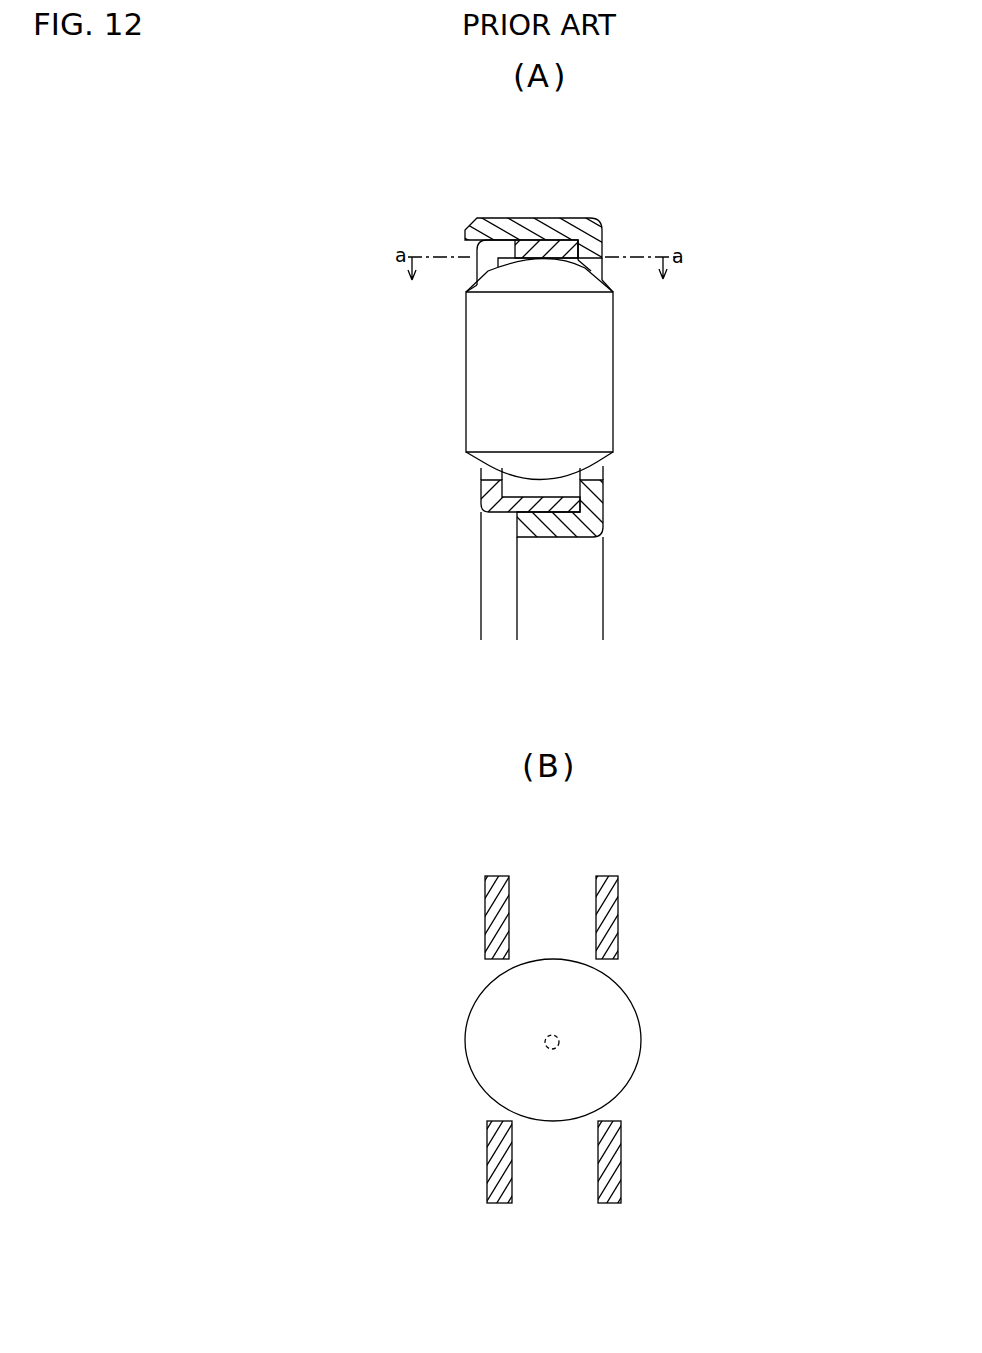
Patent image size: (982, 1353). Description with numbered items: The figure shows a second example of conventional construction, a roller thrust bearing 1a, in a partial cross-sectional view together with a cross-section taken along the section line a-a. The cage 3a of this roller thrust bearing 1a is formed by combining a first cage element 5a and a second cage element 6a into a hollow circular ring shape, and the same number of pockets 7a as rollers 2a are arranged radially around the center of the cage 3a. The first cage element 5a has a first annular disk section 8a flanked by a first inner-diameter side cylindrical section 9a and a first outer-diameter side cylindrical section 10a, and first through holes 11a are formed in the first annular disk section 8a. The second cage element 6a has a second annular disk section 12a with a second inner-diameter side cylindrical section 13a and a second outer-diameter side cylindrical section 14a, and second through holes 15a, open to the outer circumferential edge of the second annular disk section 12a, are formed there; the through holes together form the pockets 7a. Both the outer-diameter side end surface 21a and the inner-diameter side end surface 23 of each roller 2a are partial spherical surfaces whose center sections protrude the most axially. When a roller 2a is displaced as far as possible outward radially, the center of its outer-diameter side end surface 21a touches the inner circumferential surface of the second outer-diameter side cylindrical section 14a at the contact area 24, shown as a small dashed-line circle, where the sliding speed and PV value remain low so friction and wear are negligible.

The roller thrust bearing 1a is at (638, 363).
The roller 2a is at (598, 400).
The cage 3a is at (577, 212).
The first cage element 5a is at (590, 247).
The second cage element 6a is at (493, 500).
The pocket 7a is at (603, 472).
The first annular disk section 8a is at (590, 502).
The first inner-diameter side cylindrical section 9a is at (548, 527).
The first outer-diameter side cylindrical section 10a is at (500, 230).
The first through hole 11a is at (612, 289).
The second annular disk section 12a is at (487, 490).
The second inner-diameter side cylindrical section 13a is at (494, 516).
The second outer-diameter side cylindrical section 14a is at (543, 250).
The second through hole 15a is at (500, 482).
The outer-diameter side end surface 21a is at (500, 263).
The inner-diameter side end surface 23 is at (607, 468).
The contact area 24 is at (560, 1043).